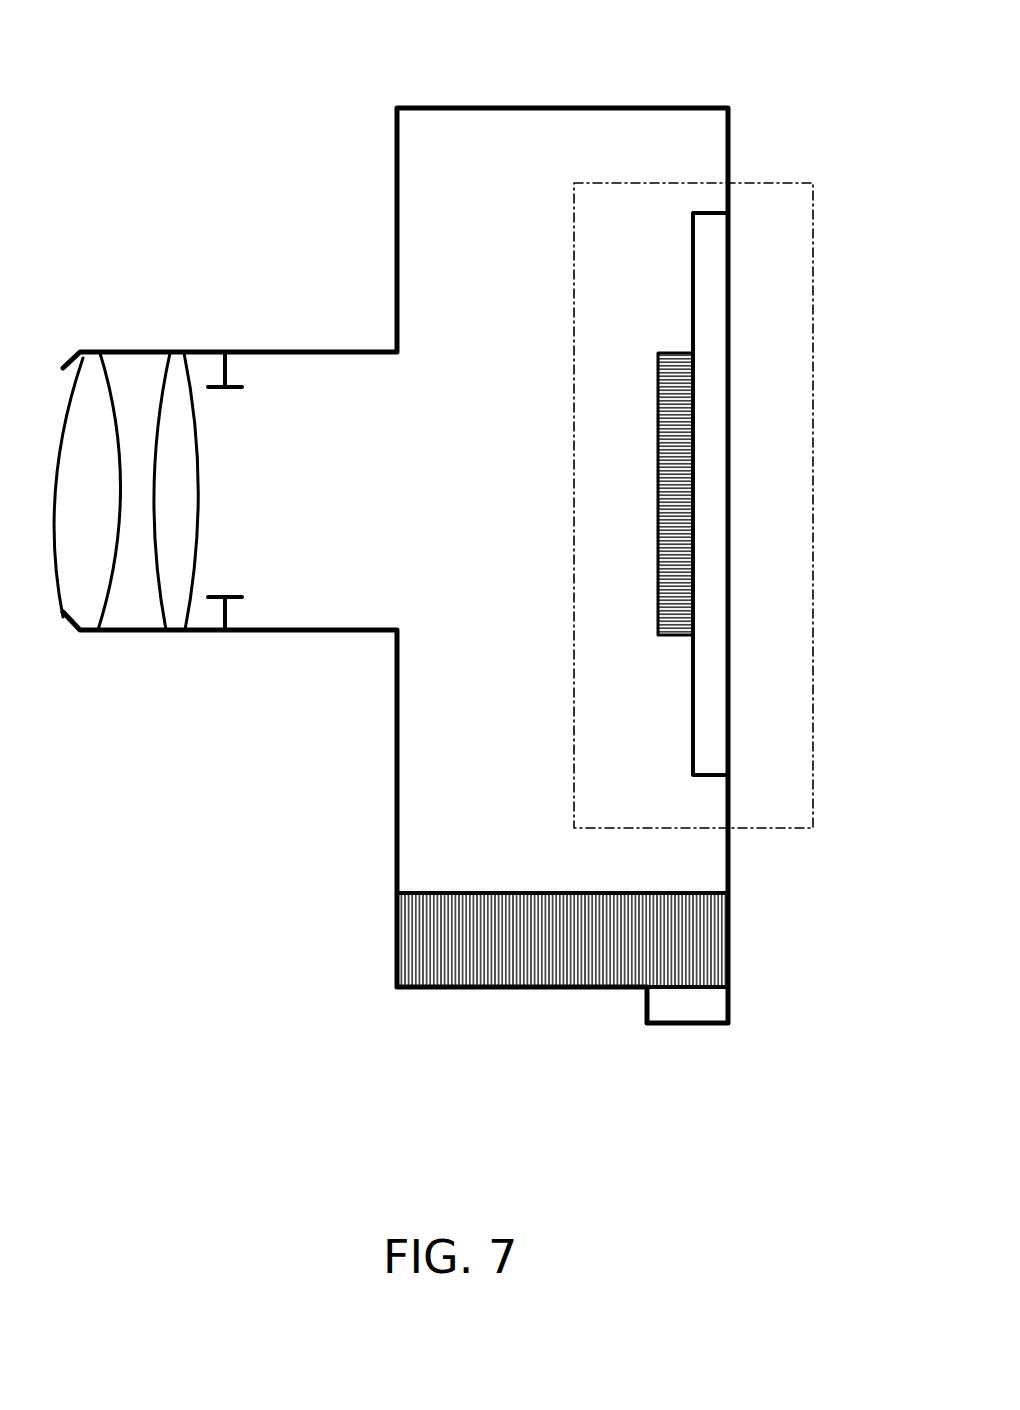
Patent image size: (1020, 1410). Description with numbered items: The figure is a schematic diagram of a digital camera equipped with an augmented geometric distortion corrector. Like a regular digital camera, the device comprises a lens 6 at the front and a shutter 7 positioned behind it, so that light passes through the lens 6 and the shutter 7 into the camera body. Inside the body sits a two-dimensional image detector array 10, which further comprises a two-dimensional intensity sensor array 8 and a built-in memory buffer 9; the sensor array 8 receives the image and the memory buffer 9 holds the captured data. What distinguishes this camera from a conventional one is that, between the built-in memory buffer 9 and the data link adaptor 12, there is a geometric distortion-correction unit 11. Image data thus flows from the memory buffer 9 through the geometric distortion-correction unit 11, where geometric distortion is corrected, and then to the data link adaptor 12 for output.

The lens 6 is at (85, 372).
The shutter 7 is at (228, 350).
The 2-D intensity sensor array 8 is at (675, 367).
The built-in memory buffer 9 is at (710, 232).
The 2-D image detector array 10 is at (815, 378).
The geometric distortion-correction unit 11 is at (703, 922).
The data link adaptor 12 is at (702, 1010).